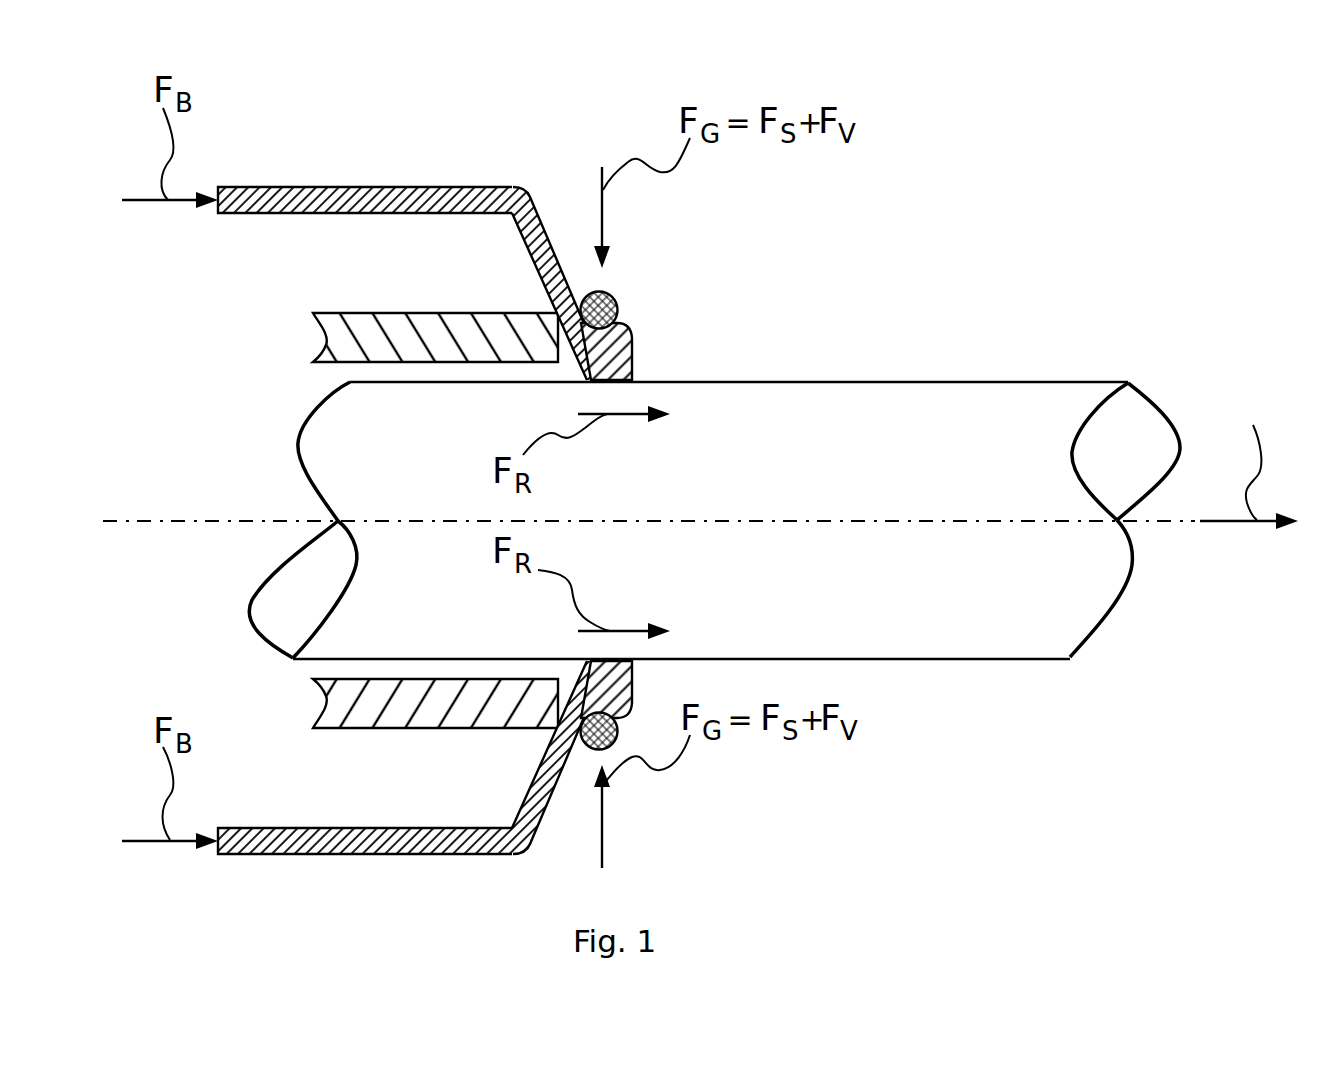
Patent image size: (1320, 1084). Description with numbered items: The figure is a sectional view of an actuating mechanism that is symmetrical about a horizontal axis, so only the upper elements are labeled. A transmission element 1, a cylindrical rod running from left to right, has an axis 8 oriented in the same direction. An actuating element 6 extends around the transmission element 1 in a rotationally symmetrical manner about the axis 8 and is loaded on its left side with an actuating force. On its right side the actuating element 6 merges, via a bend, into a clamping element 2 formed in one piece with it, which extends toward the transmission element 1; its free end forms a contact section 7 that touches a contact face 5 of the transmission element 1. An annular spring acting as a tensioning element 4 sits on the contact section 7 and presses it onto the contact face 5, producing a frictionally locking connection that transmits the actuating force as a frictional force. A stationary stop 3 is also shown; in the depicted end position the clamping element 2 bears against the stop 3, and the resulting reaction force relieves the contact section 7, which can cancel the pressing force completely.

The transmission element 1 is at (1015, 435).
The clamping element 2 is at (540, 233).
The stop 3 is at (338, 362).
The tensioning element 4 is at (614, 298).
The contact face 5 is at (833, 380).
The actuating element 6 is at (443, 187).
The contact section 7 is at (632, 327).
The axis 8 is at (158, 521).